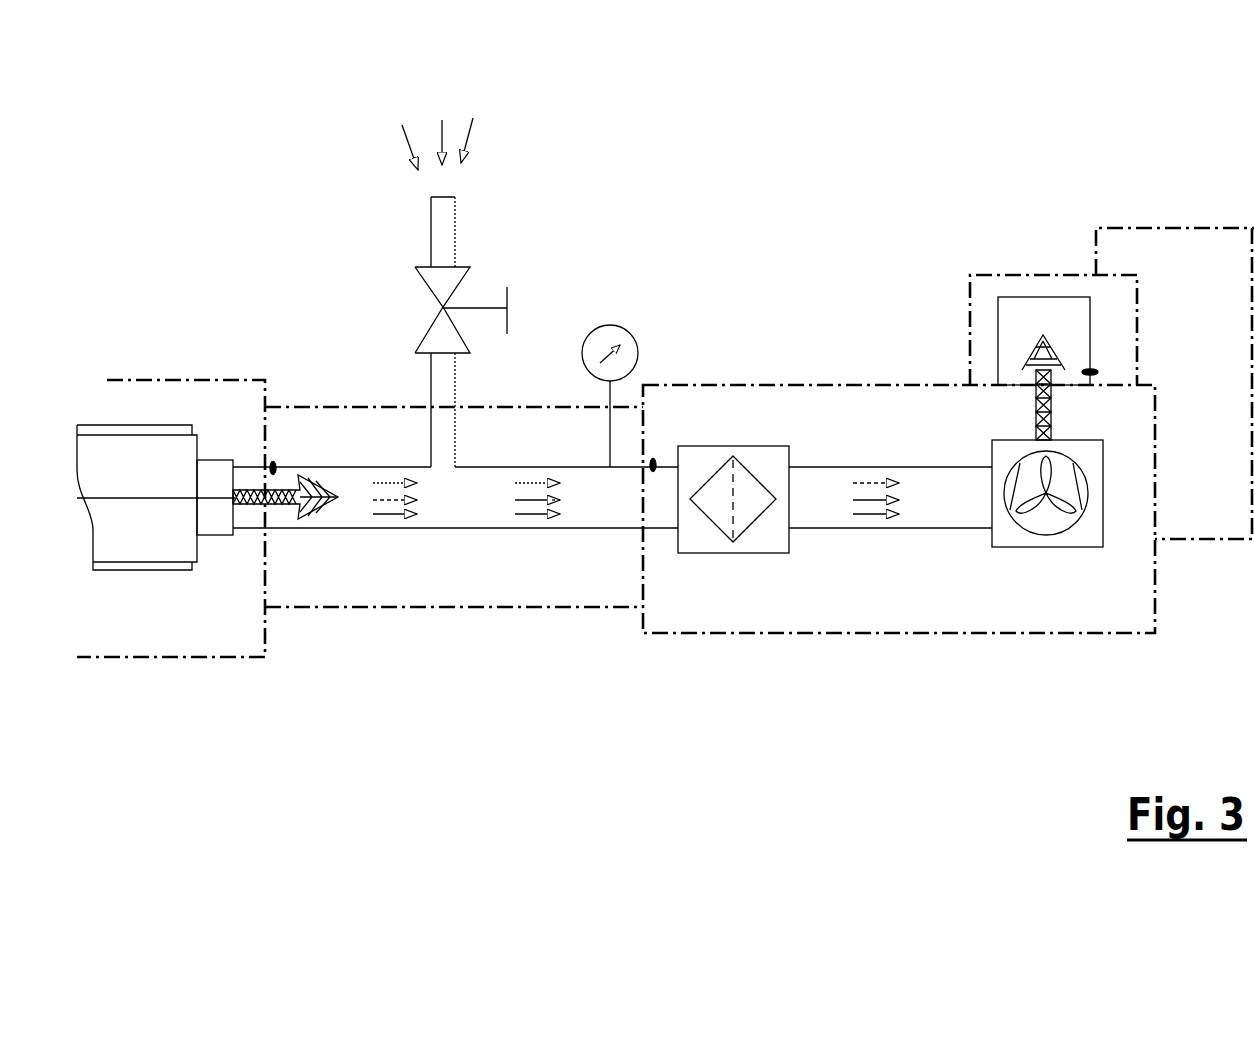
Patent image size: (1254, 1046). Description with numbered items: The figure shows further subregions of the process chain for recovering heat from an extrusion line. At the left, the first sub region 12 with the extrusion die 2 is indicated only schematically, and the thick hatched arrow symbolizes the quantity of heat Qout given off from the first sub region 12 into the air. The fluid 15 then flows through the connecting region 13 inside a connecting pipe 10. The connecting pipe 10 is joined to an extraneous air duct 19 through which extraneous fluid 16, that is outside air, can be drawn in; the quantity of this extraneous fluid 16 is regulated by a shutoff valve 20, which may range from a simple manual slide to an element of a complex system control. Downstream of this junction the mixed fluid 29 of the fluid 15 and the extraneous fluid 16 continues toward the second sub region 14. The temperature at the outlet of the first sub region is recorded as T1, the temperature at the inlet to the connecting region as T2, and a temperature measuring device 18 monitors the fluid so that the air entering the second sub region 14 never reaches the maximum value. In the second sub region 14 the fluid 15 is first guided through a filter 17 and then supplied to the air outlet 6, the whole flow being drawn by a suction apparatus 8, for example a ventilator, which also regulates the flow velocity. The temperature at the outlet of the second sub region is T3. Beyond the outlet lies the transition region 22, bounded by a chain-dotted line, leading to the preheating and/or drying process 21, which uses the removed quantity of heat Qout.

The extrusion die 2 is at (145, 468).
The first sub region 12 is at (142, 617).
The connecting pipe 10 is at (340, 466).
The connecting region 13 is at (522, 575).
The quantity of heat Qout is at (1043, 333).
The temperature at the outlet of 12 T1 is at (275, 461).
The extraneous air duct 19 is at (443, 435).
The extraneous fluid 16 is at (470, 140).
The shutoff valve 20 is at (455, 292).
The temperature measuring device 18 is at (610, 332).
The temperature at the inlet to 13 T2 is at (653, 458).
The second sub region 14 is at (1030, 597).
The filter 17 is at (763, 543).
The fluid 15 is at (382, 500).
The mixed fluid of 15 and 16 29 is at (552, 500).
The suction apparatus 8 is at (1012, 457).
The air outlet 6 is at (1013, 352).
The transition region between 14 and 21 22 is at (985, 290).
The temperature at the outlet of 14 T3 is at (1098, 373).
The preheating and/or drying process 21 is at (1209, 384).